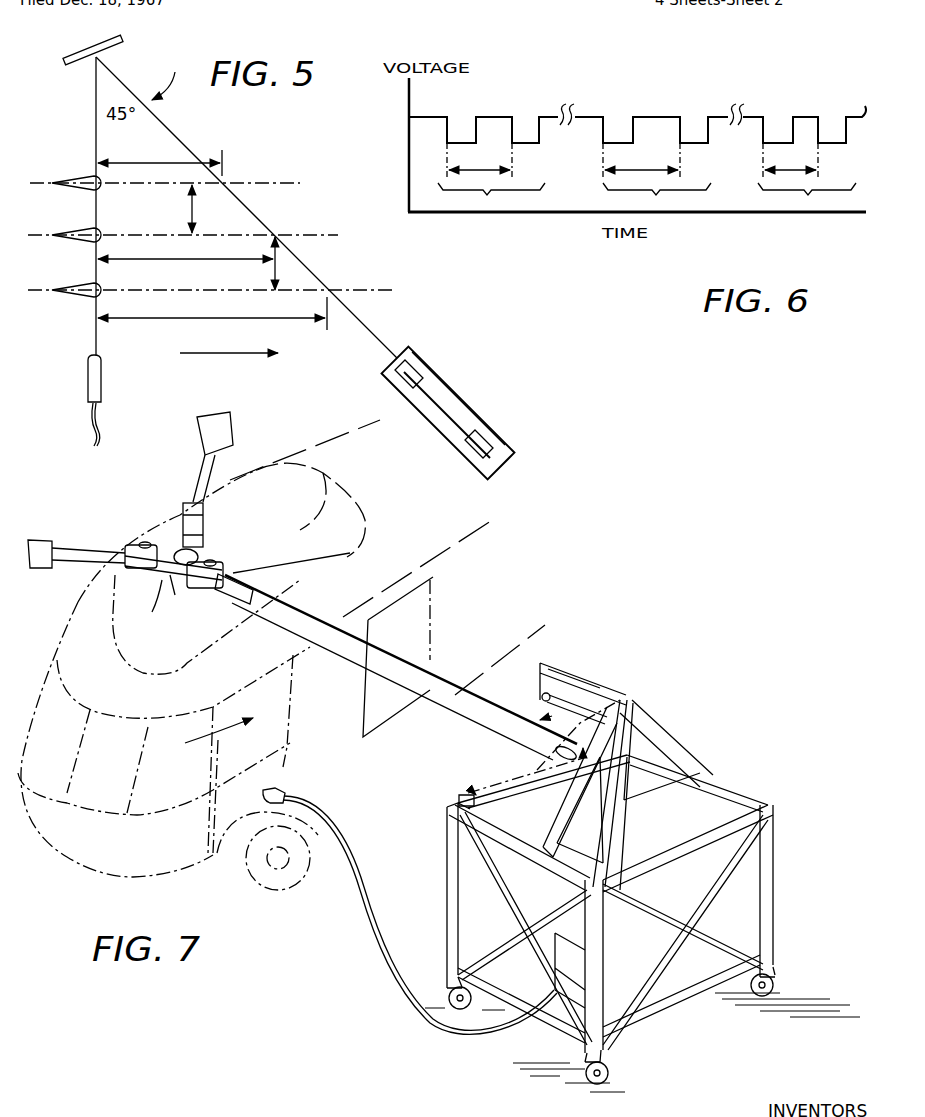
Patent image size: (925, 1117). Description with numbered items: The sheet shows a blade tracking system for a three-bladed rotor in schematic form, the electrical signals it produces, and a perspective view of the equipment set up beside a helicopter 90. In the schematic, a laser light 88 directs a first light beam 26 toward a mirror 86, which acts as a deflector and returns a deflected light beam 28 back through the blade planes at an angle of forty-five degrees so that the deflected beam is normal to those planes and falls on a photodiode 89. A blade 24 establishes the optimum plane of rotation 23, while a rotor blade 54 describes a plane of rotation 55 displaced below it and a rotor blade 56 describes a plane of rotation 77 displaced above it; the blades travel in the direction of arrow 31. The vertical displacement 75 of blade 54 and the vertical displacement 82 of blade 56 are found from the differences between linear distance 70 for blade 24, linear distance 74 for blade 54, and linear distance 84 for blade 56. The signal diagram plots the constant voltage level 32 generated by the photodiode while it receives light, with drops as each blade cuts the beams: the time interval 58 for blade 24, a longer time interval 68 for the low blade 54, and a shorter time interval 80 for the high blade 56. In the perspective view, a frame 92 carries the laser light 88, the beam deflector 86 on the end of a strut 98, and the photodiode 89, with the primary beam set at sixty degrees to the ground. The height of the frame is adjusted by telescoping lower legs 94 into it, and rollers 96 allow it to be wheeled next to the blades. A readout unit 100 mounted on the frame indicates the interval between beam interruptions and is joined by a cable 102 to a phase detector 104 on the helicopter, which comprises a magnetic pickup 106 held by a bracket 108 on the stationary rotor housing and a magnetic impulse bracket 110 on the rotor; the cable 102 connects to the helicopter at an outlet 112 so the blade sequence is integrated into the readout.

In FIG. 5, the optimum plane of rotation 23 is at (318, 235).
In FIG. 5, the blade 24 is at (80, 230).
In FIG. 6, the blade 24 is at (491, 198).
In FIG. 7, the blade 24 is at (445, 690).
In FIG. 5, the first light beam 26 is at (176, 135).
In FIG. 7, the first light beam 26 is at (628, 690).
In FIG. 5, the deflected light beam 28 is at (95, 140).
In FIG. 7, the deflected light beam 28 is at (510, 756).
In FIG. 5, the arrow 31 is at (200, 355).
In FIG. 7, the arrow 31 is at (206, 740).
In FIG. 6, the constant voltage level 32 is at (432, 116).
In FIG. 5, the rotor blade 54 is at (80, 285).
In FIG. 6, the rotor blade 54 is at (657, 198).
In FIG. 7, the rotor blade 54 is at (45, 548).
In FIG. 5, the plane of rotation 55 is at (365, 290).
In FIG. 5, the rotor blade 56 is at (80, 178).
In FIG. 6, the rotor blade 56 is at (807, 198).
In FIG. 7, the rotor blade 56 is at (233, 432).
In FIG. 6, the time interval 58 is at (479, 160).
In FIG. 6, the time interval 68 is at (641, 160).
In FIG. 5, the linear distance 70 is at (213, 263).
In FIG. 5, the linear distance 74 is at (186, 321).
In FIG. 5, the vertical displacement 75 is at (278, 266).
In FIG. 5, the plane of rotation 77 is at (268, 182).
In FIG. 6, the time interval 80 is at (790, 160).
In FIG. 5, the vertical displacement 82 is at (195, 215).
In FIG. 5, the linear distance 84 is at (172, 160).
In FIG. 5, the mirror 86 is at (105, 36).
In FIG. 7, the mirror 86 is at (542, 702).
In FIG. 5, the laser light 88 is at (470, 410).
In FIG. 7, the laser light 88 is at (625, 742).
In FIG. 5, the photodiode 89 is at (85, 372).
In FIG. 7, the photodiode 89 is at (465, 795).
In FIG. 7, the helicopter 90 is at (70, 630).
In FIG. 7, the frame 92 is at (775, 890).
In FIG. 7, the lower legs 94 is at (604, 1058).
In FIG. 7, the rollers 96 is at (608, 1078).
In FIG. 7, the strut 98 is at (590, 680).
In FIG. 7, the readout unit 100 is at (572, 968).
In FIG. 7, the cable 102 is at (358, 890).
In FIG. 7, the phase detector 104 is at (133, 568).
In FIG. 7, the magnetic pickup 106 is at (178, 585).
In FIG. 7, the bracket 108 is at (190, 590).
In FIG. 7, the magnetic impulse bracket 110 is at (205, 562).
In FIG. 7, the outlet 112 is at (280, 790).